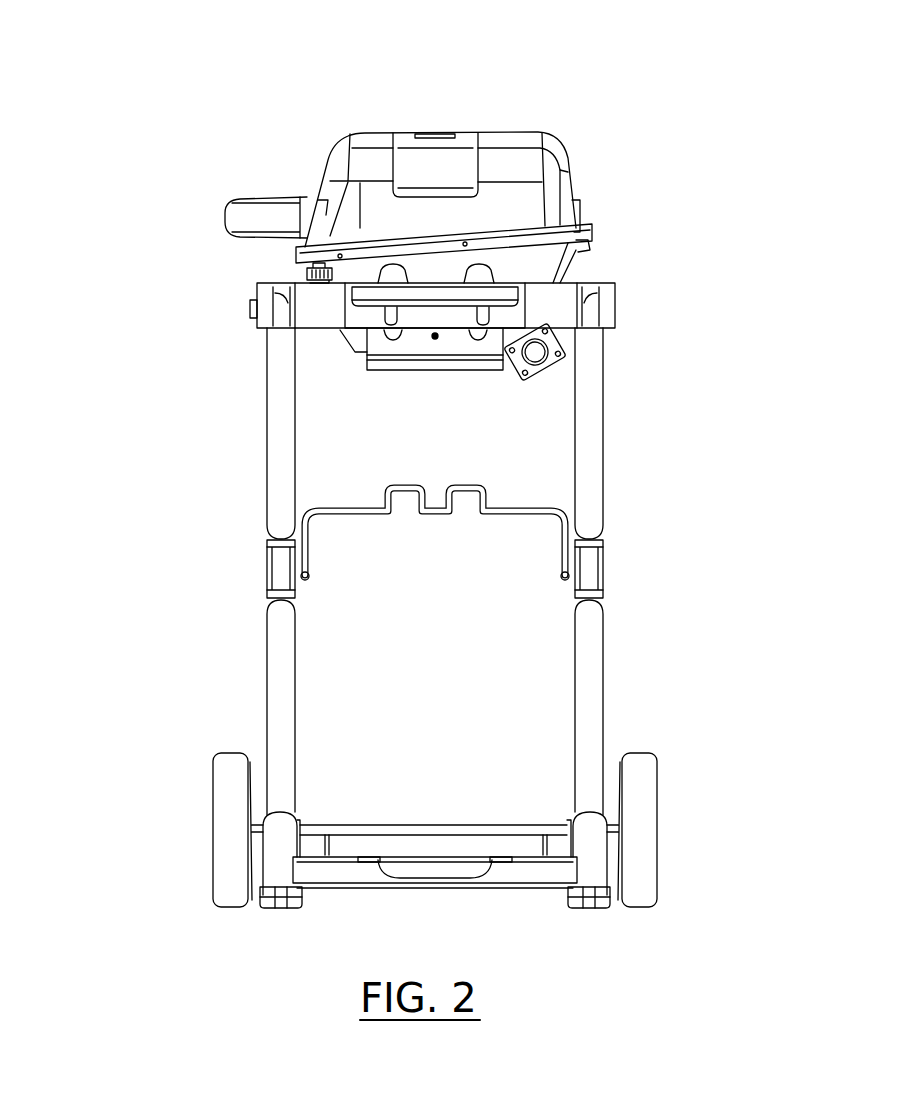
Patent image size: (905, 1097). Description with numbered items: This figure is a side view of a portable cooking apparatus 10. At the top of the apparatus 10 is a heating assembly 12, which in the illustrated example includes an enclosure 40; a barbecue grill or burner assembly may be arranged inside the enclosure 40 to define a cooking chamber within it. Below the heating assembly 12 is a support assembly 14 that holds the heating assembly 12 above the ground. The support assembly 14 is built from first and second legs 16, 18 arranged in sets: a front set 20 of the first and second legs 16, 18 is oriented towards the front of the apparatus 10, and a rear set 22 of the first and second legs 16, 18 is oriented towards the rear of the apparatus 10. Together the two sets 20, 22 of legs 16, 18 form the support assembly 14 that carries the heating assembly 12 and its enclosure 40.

The portable cooking apparatus 10 is at (205, 128).
The heating assembly 12 is at (587, 128).
The support assembly 14 is at (225, 596).
The first leg 16 is at (285, 687).
The second leg 18 is at (290, 387).
The front set of legs 20 is at (232, 443).
The rear set of legs 22 is at (658, 388).
The enclosure 40 is at (507, 135).